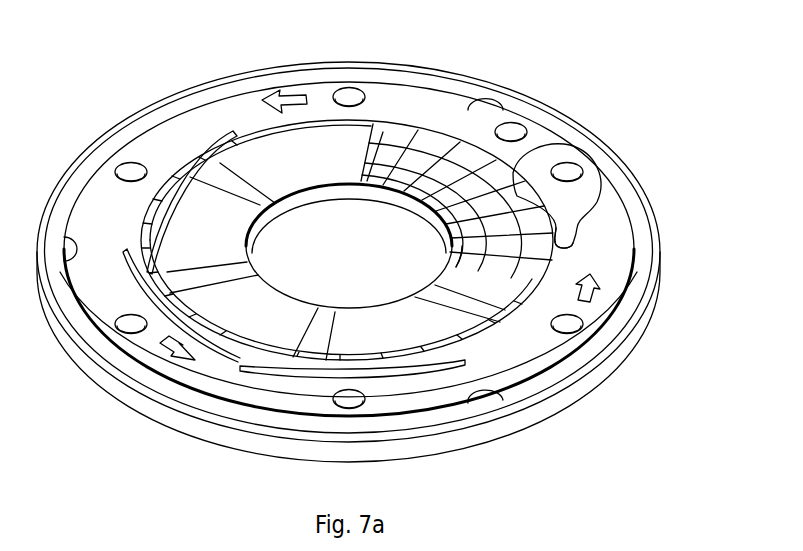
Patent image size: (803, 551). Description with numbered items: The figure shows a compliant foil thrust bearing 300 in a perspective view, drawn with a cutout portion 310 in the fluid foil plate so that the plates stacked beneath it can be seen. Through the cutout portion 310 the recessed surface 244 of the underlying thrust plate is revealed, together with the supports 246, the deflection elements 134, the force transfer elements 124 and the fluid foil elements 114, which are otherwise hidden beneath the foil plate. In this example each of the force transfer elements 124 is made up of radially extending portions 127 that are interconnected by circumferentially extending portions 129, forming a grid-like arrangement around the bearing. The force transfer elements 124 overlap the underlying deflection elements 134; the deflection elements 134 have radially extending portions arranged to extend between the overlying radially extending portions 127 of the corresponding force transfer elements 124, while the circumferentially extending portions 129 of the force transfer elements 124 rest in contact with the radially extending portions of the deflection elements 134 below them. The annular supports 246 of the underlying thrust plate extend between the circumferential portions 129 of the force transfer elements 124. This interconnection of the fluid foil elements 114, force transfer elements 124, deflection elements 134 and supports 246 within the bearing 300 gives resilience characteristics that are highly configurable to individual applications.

The compliant foil thrust bearing 300 is at (88, 112).
The fluid foil elements 114 is at (310, 167).
The supports 246 is at (456, 152).
The deflection elements 134 is at (497, 157).
The radially extending portions 127 is at (443, 160).
The force transfer elements 124 is at (515, 165).
The circumferentially extending portions 129 is at (490, 167).
The recessed surface 244 is at (520, 210).
The cutout portion 310 is at (582, 200).